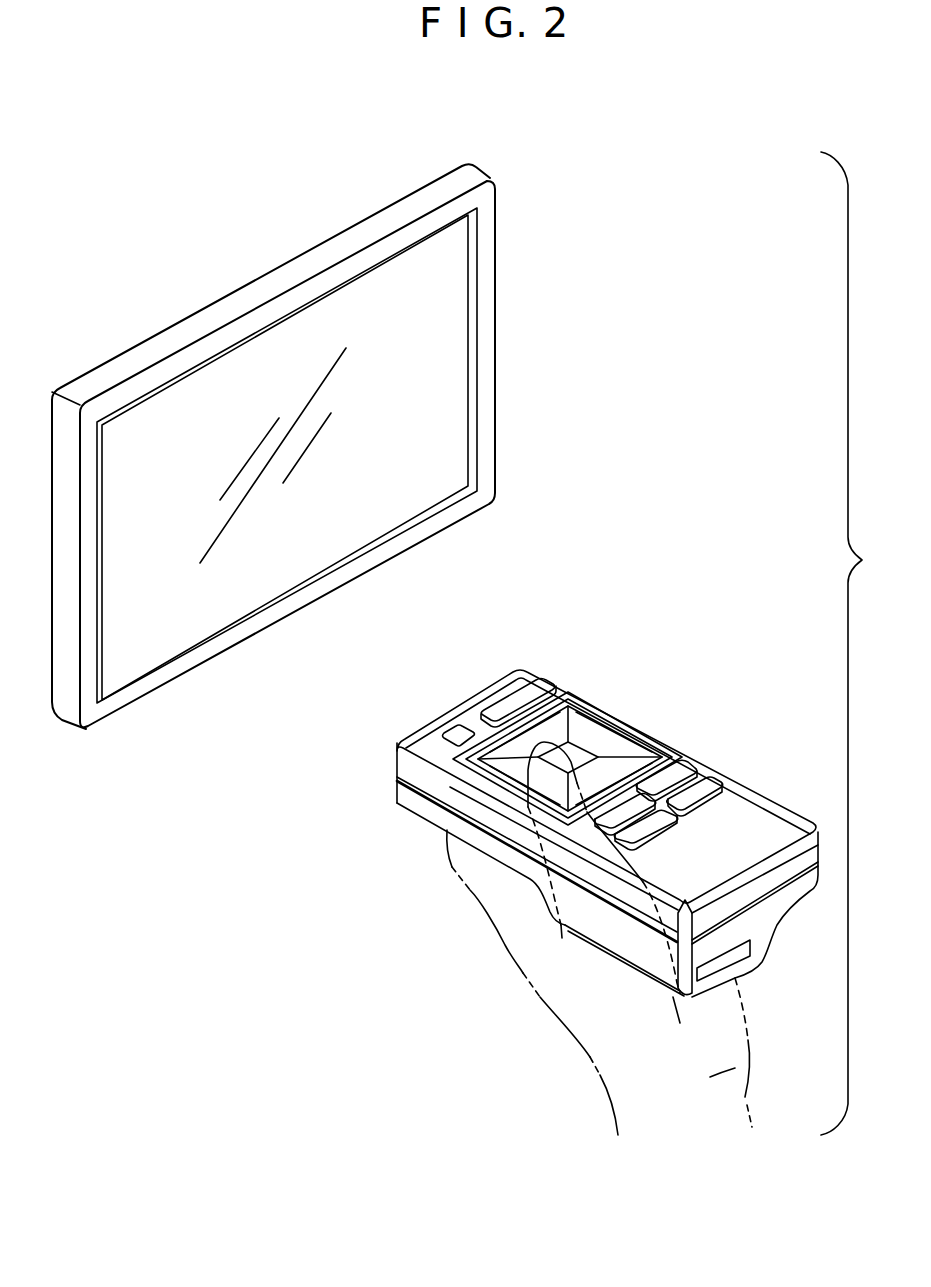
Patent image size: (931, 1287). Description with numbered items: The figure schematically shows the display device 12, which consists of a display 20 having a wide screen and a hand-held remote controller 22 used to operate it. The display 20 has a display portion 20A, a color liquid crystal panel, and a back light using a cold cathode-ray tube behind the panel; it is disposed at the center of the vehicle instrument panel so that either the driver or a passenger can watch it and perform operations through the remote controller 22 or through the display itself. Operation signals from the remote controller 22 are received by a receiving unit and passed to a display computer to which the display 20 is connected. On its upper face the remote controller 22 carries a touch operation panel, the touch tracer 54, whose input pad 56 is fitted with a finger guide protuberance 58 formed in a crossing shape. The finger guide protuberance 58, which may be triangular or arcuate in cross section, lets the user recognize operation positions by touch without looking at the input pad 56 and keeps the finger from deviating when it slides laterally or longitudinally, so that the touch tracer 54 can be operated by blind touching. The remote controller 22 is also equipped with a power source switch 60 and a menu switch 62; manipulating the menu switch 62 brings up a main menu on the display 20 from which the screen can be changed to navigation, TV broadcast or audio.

The display device 12 is at (706, 559).
The display 20 is at (497, 398).
The display portion 20A is at (438, 367).
The remote controller 22 is at (717, 775).
The touch tracer 54 is at (645, 714).
The input pad 56 is at (578, 722).
The finger guide protuberance 58 is at (647, 750).
The power source switch 60 is at (532, 690).
The menu switch 62 is at (682, 775).